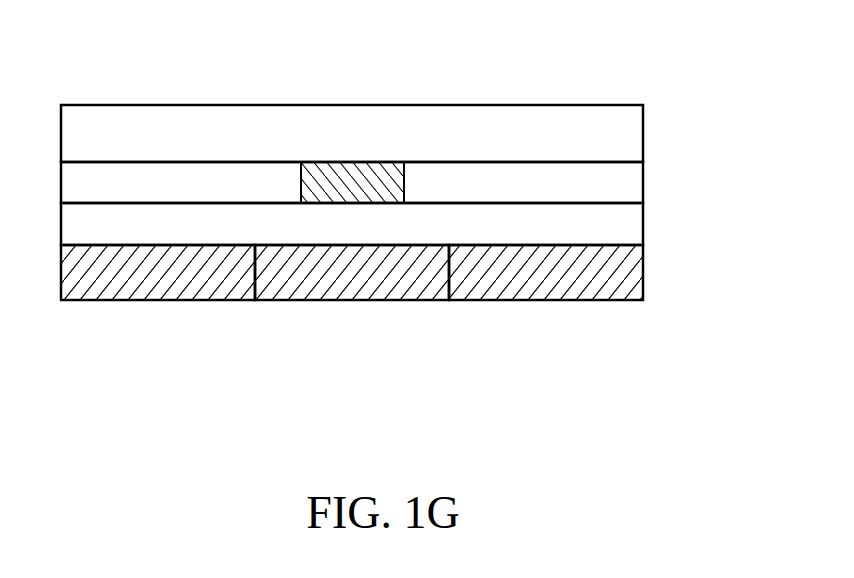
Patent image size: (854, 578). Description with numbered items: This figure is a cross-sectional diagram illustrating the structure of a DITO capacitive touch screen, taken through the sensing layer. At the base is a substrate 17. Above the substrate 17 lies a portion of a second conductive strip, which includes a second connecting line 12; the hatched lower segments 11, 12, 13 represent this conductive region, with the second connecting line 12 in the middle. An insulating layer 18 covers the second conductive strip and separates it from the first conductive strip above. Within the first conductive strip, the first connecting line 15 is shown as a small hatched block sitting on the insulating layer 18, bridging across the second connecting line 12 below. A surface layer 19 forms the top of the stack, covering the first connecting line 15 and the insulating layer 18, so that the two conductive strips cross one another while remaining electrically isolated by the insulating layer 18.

The first hatched substrate segment 11 is at (168, 272).
The second connecting line 12 is at (340, 272).
The third hatched substrate segment 13 is at (560, 272).
The first connecting line 15 is at (352, 173).
The substrate 17 is at (624, 225).
The insulating layer 18 is at (624, 190).
The surface layer 19 is at (630, 133).